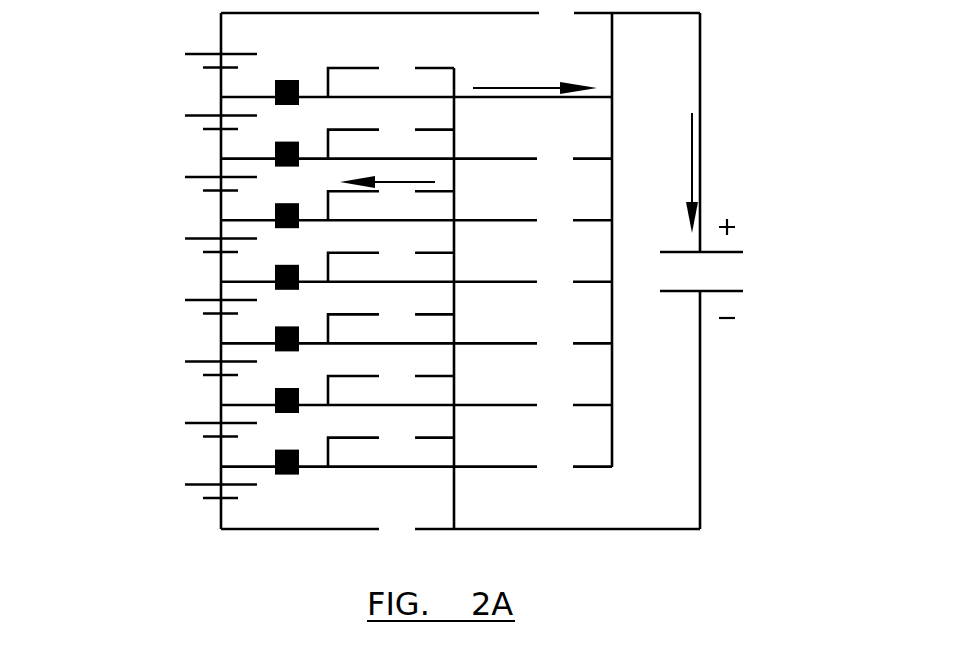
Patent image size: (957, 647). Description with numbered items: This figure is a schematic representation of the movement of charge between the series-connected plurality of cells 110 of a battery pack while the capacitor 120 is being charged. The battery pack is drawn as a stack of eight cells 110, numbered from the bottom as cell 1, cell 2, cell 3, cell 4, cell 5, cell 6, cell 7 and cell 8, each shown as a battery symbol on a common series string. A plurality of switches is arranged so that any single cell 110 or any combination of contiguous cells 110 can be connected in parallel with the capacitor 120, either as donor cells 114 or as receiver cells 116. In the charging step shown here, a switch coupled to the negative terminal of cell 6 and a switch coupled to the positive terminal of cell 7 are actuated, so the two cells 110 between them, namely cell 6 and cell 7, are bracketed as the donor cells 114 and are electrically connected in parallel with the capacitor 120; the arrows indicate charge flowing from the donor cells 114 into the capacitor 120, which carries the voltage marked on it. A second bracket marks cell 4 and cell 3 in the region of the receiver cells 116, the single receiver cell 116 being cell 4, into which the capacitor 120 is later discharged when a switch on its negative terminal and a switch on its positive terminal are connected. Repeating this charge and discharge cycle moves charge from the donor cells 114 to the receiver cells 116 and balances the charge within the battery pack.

The plurality of cells 110 is at (368, 271).
The donor cells 114 is at (183, 150).
The receiver cells 116 is at (183, 328).
The capacitor 120 is at (786, 297).
The cell 1 is at (212, 492).
The cell 2 is at (212, 430).
The cell 3 is at (212, 369).
The cell 4 is at (212, 307).
The cell 5 is at (212, 246).
The cell 6 is at (212, 184).
The cell 7 is at (212, 123).
The cell 8 is at (212, 61).